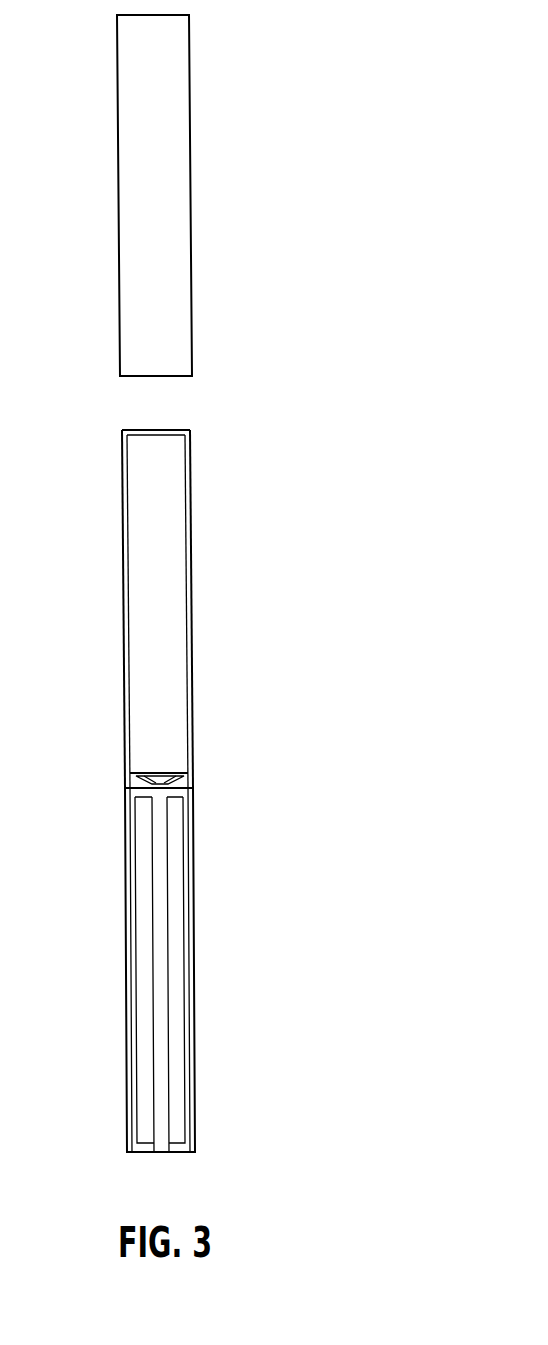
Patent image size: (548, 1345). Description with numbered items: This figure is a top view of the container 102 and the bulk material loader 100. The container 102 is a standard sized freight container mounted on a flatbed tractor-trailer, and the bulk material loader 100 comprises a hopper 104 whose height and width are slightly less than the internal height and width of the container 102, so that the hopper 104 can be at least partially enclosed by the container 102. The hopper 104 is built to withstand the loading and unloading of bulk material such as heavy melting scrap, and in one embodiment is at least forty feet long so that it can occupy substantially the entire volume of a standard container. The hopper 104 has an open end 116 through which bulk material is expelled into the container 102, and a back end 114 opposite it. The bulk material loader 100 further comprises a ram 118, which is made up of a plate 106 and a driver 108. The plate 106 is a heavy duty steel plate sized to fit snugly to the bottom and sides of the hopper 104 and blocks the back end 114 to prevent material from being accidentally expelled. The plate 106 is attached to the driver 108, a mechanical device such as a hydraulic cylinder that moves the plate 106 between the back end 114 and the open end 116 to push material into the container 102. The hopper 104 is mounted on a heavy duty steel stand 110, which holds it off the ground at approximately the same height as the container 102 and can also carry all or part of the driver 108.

The bulk material loader 100 is at (336, 455).
The container 102 is at (208, 150).
The hopper 104 is at (166, 557).
The plate 106 is at (129, 774).
The driver 108 is at (167, 1084).
The stand 110 is at (197, 948).
The back end 114 is at (190, 775).
The open end 116 is at (174, 424).
The ram 118 is at (169, 846).